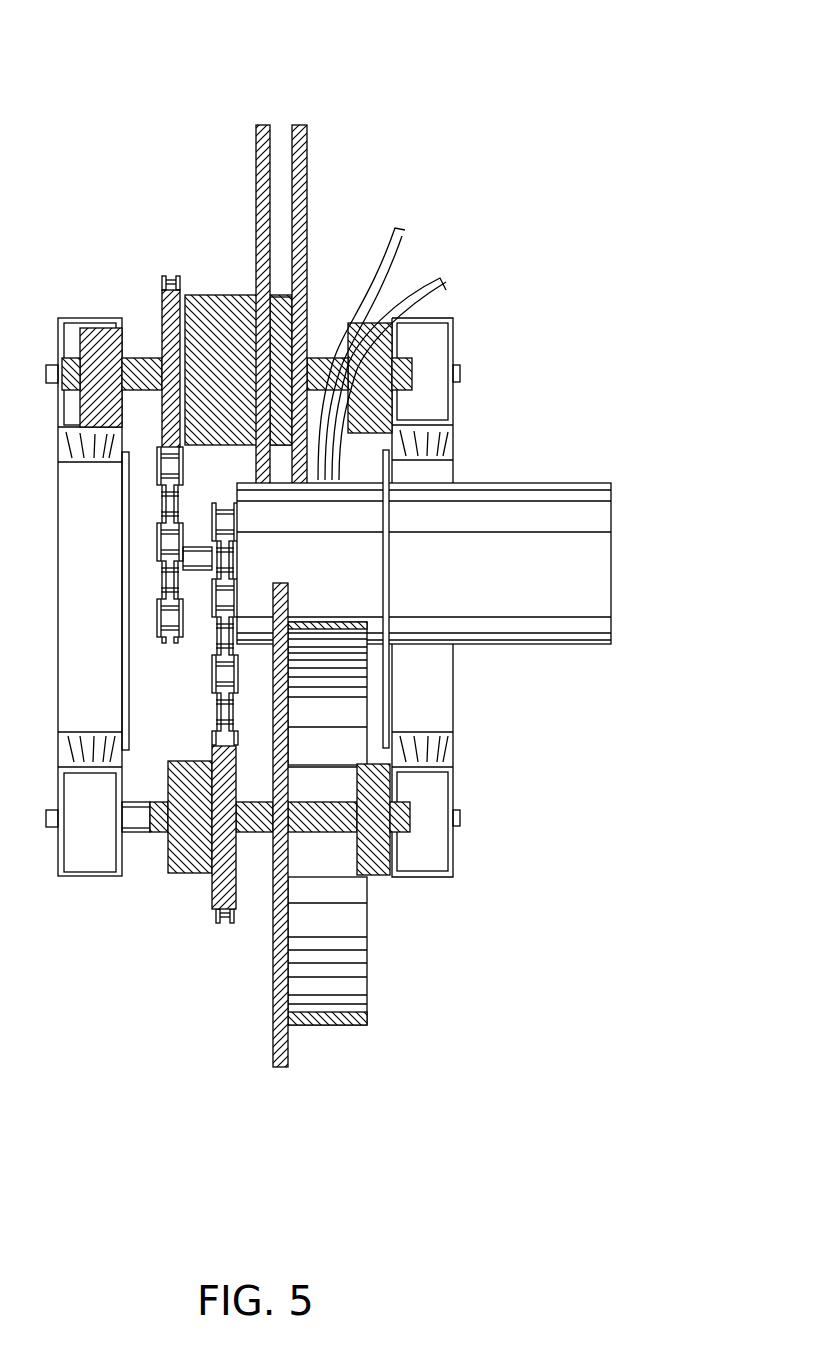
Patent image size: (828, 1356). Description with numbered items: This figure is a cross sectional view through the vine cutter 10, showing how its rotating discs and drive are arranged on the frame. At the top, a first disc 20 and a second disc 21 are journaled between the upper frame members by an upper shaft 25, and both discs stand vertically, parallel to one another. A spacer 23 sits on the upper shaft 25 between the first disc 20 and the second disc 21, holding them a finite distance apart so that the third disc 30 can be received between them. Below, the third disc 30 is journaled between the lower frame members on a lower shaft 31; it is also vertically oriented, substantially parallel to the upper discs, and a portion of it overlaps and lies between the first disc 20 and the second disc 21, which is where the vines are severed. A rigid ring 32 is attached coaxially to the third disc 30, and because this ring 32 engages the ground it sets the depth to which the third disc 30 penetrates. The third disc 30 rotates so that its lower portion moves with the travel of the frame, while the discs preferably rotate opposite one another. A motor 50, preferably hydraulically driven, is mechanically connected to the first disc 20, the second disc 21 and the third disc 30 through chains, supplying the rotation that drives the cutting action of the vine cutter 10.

The vine cutter 10 is at (594, 170).
The first disc 20 is at (254, 165).
The second disc 21 is at (312, 164).
The spacer 23 is at (279, 297).
The upper shaft 25 is at (142, 358).
The third disc 30 is at (270, 1048).
The lower shaft 31 is at (410, 803).
The ring 32 is at (349, 990).
The motor 50 is at (543, 508).